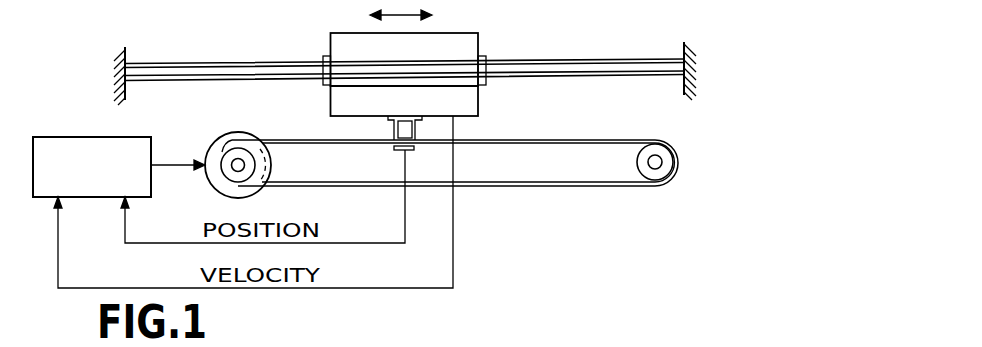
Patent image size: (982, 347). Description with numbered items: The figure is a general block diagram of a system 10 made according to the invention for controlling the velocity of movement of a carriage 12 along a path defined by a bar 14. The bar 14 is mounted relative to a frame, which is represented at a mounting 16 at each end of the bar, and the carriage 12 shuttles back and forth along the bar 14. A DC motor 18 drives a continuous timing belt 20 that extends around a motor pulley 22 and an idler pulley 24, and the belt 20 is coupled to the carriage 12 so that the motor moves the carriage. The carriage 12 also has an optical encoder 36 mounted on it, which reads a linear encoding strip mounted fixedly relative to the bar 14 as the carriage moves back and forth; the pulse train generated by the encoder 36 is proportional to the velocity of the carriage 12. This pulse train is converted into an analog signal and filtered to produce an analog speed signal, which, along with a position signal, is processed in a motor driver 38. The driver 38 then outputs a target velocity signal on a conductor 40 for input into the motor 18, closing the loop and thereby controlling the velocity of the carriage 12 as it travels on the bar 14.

The system 10 is at (517, 245).
The carriage 12 is at (477, 32).
The bar 14 is at (610, 60).
The mounting 16 is at (125, 62).
The DC motor 18 is at (210, 147).
The continuous timing belt 20 is at (567, 187).
The motor pulley 22 is at (238, 157).
The idler pulley 24 is at (662, 173).
The optical encoder 36 is at (480, 98).
The motor driver 38 is at (92, 135).
The conductor 40 is at (173, 167).